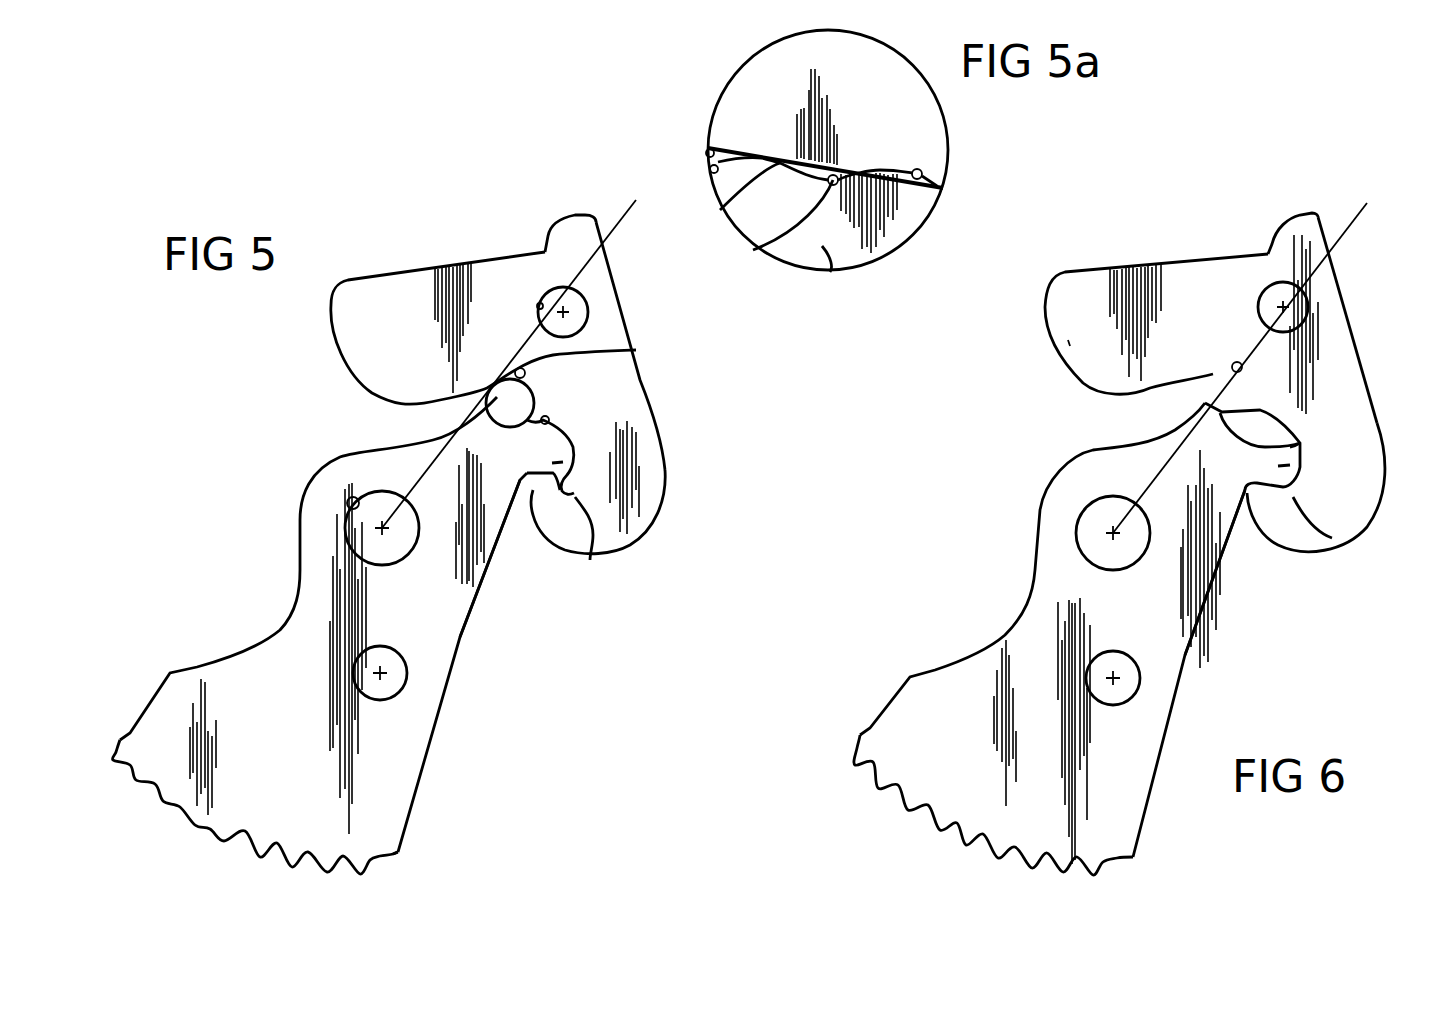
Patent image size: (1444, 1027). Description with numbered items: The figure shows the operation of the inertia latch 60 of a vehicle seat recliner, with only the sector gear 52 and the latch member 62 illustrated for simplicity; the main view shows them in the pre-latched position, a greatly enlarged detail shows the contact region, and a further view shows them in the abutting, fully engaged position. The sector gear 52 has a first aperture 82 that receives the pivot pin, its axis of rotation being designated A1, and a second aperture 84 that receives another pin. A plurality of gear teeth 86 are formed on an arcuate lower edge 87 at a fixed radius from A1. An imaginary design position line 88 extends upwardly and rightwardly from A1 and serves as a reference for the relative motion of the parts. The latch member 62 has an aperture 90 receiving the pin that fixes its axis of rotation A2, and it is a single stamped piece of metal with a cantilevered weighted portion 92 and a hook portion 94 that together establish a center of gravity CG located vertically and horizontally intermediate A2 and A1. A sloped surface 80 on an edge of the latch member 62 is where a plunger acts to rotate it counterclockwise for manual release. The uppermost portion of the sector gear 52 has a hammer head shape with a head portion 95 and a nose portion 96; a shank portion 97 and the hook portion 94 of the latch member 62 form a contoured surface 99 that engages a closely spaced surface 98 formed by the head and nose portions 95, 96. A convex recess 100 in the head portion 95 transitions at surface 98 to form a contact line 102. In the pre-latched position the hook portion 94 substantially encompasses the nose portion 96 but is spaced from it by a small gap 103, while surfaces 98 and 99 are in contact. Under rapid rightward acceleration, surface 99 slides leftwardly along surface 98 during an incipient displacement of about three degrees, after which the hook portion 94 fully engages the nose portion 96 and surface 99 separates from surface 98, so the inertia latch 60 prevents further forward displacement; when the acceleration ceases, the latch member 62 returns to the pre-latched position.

In FIG. 5, the sector gear 52 is at (432, 784).
In FIG. 5a, the sector gear 52 is at (802, 223).
In FIG. 6, the sector gear 52 is at (1156, 823).
In FIG. 5, the inertia latch 60 is at (500, 565).
In FIG. 6, the inertia latch 60 is at (1235, 560).
In FIG. 5, the latch member 62 is at (352, 272).
In FIG. 5a, the latch member 62 is at (906, 140).
In FIG. 6, the latch member 62 is at (1156, 257).
In FIG. 5, the sloped surface 80 is at (565, 237).
In FIG. 5, the first aperture 82 is at (352, 497).
In FIG. 5, the second aperture 84 is at (410, 680).
In FIG. 6, the second aperture 84 is at (1113, 678).
In FIG. 5, the gear teeth 86 is at (258, 863).
In FIG. 5, the arcuate lower edge 87 is at (393, 858).
In FIG. 5, the design position line 88 is at (617, 213).
In FIG. 6, the design position line 88 is at (1350, 218).
In FIG. 5, the aperture 90 is at (540, 305).
In FIG. 5, the cantilevered weighted portion 92 is at (343, 327).
In FIG. 6, the cantilevered weighted portion 92 is at (1070, 343).
In FIG. 5, the hook portion 94 is at (593, 555).
In FIG. 6, the hook portion 94 is at (1335, 548).
In FIG. 5, the head portion 95 is at (557, 463).
In FIG. 5a, the head portion 95 is at (830, 277).
In FIG. 6, the head portion 95 is at (1300, 443).
In FIG. 5, the nose portion 96 is at (568, 468).
In FIG. 6, the nose portion 96 is at (1283, 465).
In FIG. 5, the shank portion 97 is at (483, 390).
In FIG. 5a, the shank portion 97 is at (765, 82).
In FIG. 6, the shank portion 97 is at (1210, 377).
In FIG. 5a, the surface 98 is at (712, 168).
In FIG. 5a, the contoured surface 99 is at (707, 153).
In FIG. 5a, the convex recess 100 is at (753, 250).
In FIG. 5a, the contact line 102 is at (720, 210).
In FIG. 5, the gap 103 is at (573, 480).
In FIG. 5, the axis of rotation of sector gear A1 is at (380, 532).
In FIG. 6, the axis of rotation of sector gear A1 is at (1112, 532).
In FIG. 5, the axis of rotation of latch member A2 is at (568, 306).
In FIG. 6, the axis of rotation of latch member A2 is at (1305, 312).
In FIG. 5, the center of gravity CG is at (545, 390).
In FIG. 6, the center of gravity CG is at (1241, 370).